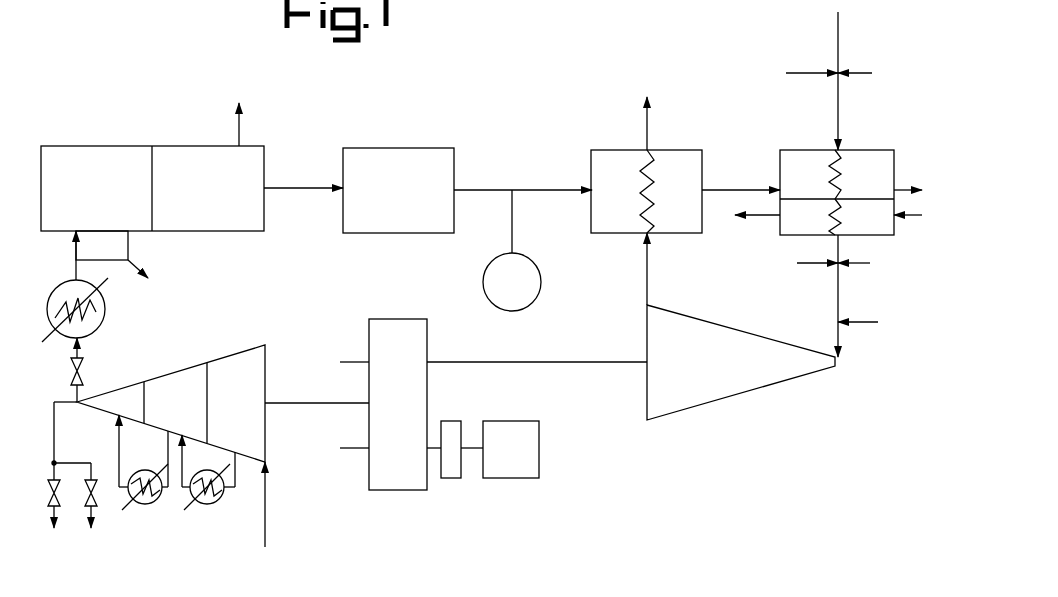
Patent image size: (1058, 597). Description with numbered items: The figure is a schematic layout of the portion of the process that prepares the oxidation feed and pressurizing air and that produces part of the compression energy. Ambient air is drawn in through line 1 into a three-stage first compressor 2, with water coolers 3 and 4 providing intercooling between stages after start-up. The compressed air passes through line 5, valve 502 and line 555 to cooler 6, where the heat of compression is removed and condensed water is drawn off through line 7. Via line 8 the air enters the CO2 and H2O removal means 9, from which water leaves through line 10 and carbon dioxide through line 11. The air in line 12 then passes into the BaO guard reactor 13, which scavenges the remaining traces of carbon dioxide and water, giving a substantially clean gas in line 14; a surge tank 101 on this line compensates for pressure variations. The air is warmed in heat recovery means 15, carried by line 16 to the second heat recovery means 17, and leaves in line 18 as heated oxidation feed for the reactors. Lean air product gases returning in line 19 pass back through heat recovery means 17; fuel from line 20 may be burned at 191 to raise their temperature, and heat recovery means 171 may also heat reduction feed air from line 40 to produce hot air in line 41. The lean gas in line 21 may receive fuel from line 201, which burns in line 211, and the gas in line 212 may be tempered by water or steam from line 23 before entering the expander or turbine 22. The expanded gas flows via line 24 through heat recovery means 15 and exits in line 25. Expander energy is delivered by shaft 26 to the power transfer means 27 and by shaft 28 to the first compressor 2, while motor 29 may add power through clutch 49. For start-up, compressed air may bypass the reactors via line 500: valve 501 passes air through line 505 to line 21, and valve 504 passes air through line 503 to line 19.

The line 1 is at (268, 498).
The first compressor 2 is at (258, 346).
The water cooler 3 is at (214, 503).
The water cooler 4 is at (150, 503).
The line 5 is at (84, 380).
The cooler 6 is at (105, 310).
The line 7 is at (118, 264).
The line 8 is at (72, 256).
The CO2 and H2O removal means 9 is at (72, 146).
The line 10 is at (128, 247).
The line 11 is at (243, 133).
The line 12 is at (293, 186).
The BaO guard reactor 13 is at (405, 148).
The line 14 is at (495, 188).
The heat recovery means 15 is at (607, 150).
The line 16 is at (727, 188).
The second heat recovery means 17 is at (803, 137).
The line 18 is at (900, 182).
The line 19 is at (838, 32).
The line 20 is at (800, 70).
The line 21 is at (836, 250).
The expander or turbine 22 is at (705, 404).
The line 23 is at (858, 320).
The line 24 is at (648, 272).
The line 25 is at (649, 128).
The shaft 26 is at (480, 360).
The power transfer means 27 is at (385, 319).
The shaft 28 is at (290, 402).
The motor 29 is at (352, 360).
The line 40 is at (909, 230).
The line 41 is at (762, 218).
The clutch 49 is at (457, 421).
The surge tank 101 is at (538, 265).
The heat recovery means 171 is at (773, 236).
The line 191 is at (836, 102).
The line 201 is at (858, 258).
The line 211 is at (836, 284).
The line 212 is at (836, 330).
The line 500 is at (60, 390).
The valve 501 is at (60, 498).
The valve 502 is at (84, 366).
The line 503 is at (862, 60).
The valve 504 is at (96, 494).
The line 505 is at (58, 578).
The line 555 is at (82, 352).